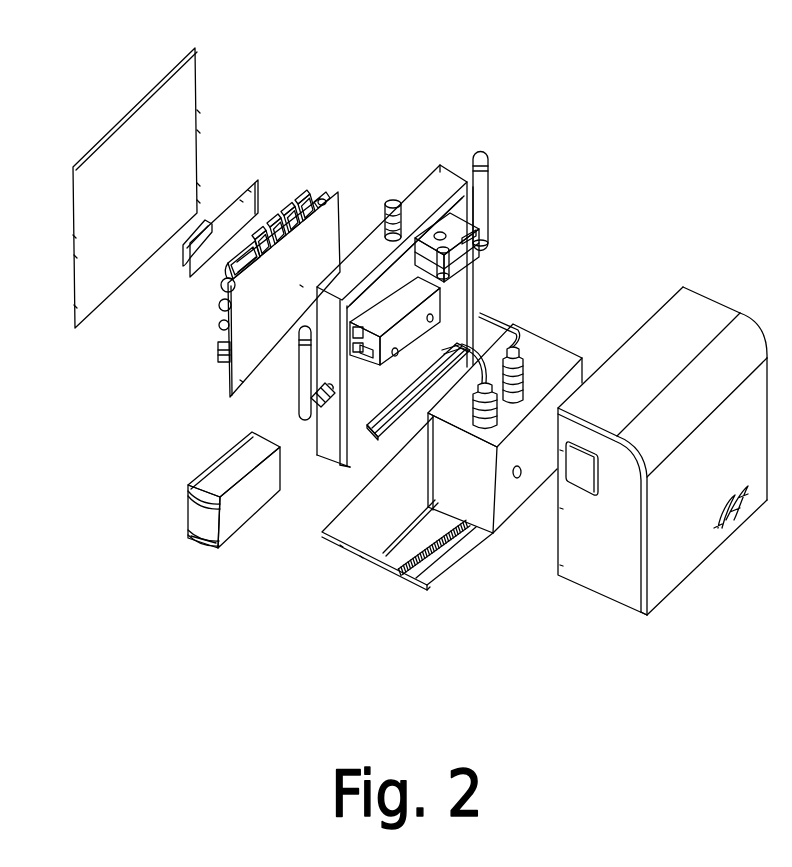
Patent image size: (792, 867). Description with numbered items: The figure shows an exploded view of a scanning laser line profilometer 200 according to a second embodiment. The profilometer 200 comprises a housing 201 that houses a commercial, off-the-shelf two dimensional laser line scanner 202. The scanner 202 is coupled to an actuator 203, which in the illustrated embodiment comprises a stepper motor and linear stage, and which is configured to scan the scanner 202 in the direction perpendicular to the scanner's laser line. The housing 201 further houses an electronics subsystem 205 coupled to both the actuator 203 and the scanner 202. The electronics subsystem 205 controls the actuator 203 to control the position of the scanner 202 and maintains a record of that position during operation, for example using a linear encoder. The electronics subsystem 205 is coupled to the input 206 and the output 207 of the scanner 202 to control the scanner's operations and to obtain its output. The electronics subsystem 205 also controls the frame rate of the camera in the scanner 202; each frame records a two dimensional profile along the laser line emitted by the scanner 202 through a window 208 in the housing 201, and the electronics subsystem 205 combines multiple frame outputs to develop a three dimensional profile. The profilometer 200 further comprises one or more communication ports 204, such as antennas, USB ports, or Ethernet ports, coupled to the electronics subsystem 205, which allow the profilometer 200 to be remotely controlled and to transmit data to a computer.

The profilometer 200 is at (385, 103).
The housing 201 is at (741, 476).
The two dimensional laser line scanner 202 is at (480, 476).
The actuator 203 is at (498, 270).
The communication port 204 is at (487, 160).
The electronics subsystem 205 is at (295, 314).
The input 206 is at (520, 330).
The output 207 is at (493, 427).
The window 208 is at (412, 565).